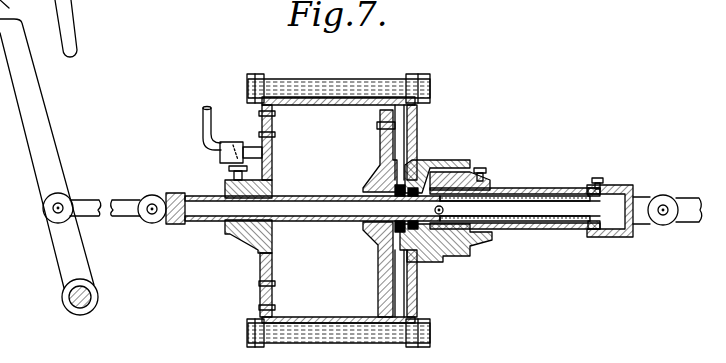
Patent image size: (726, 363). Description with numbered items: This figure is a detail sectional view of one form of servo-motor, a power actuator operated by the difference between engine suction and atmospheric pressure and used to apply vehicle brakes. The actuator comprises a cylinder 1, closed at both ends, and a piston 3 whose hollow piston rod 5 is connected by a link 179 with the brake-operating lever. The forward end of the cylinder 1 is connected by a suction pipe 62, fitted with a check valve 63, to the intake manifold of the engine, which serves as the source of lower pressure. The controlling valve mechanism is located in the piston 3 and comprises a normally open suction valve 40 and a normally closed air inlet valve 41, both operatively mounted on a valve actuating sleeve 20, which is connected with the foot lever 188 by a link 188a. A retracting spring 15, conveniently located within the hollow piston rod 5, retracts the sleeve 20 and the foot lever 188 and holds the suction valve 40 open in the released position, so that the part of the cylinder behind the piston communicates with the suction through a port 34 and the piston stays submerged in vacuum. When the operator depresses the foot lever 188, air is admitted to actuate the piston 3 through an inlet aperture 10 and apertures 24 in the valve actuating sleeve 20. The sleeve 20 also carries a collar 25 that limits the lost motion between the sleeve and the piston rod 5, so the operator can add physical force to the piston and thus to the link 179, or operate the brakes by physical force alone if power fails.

The foot lever 188 is at (37, 151).
The link 188a is at (96, 205).
The valve actuating sleeve 20 is at (222, 224).
The suction pipe 62 is at (212, 101).
The check valve 63 is at (219, 160).
The cylinder 1 is at (323, 97).
The suction valve 40 is at (388, 190).
The port 34 is at (421, 169).
The air inlet valve 41 is at (445, 183).
The piston 3 is at (378, 252).
The apertures 24 is at (452, 253).
The piston rod 5 is at (497, 193).
The retracting spring 15 is at (534, 229).
The inlet aperture 10 is at (632, 229).
The collar 25 is at (607, 190).
The link 179 is at (683, 207).